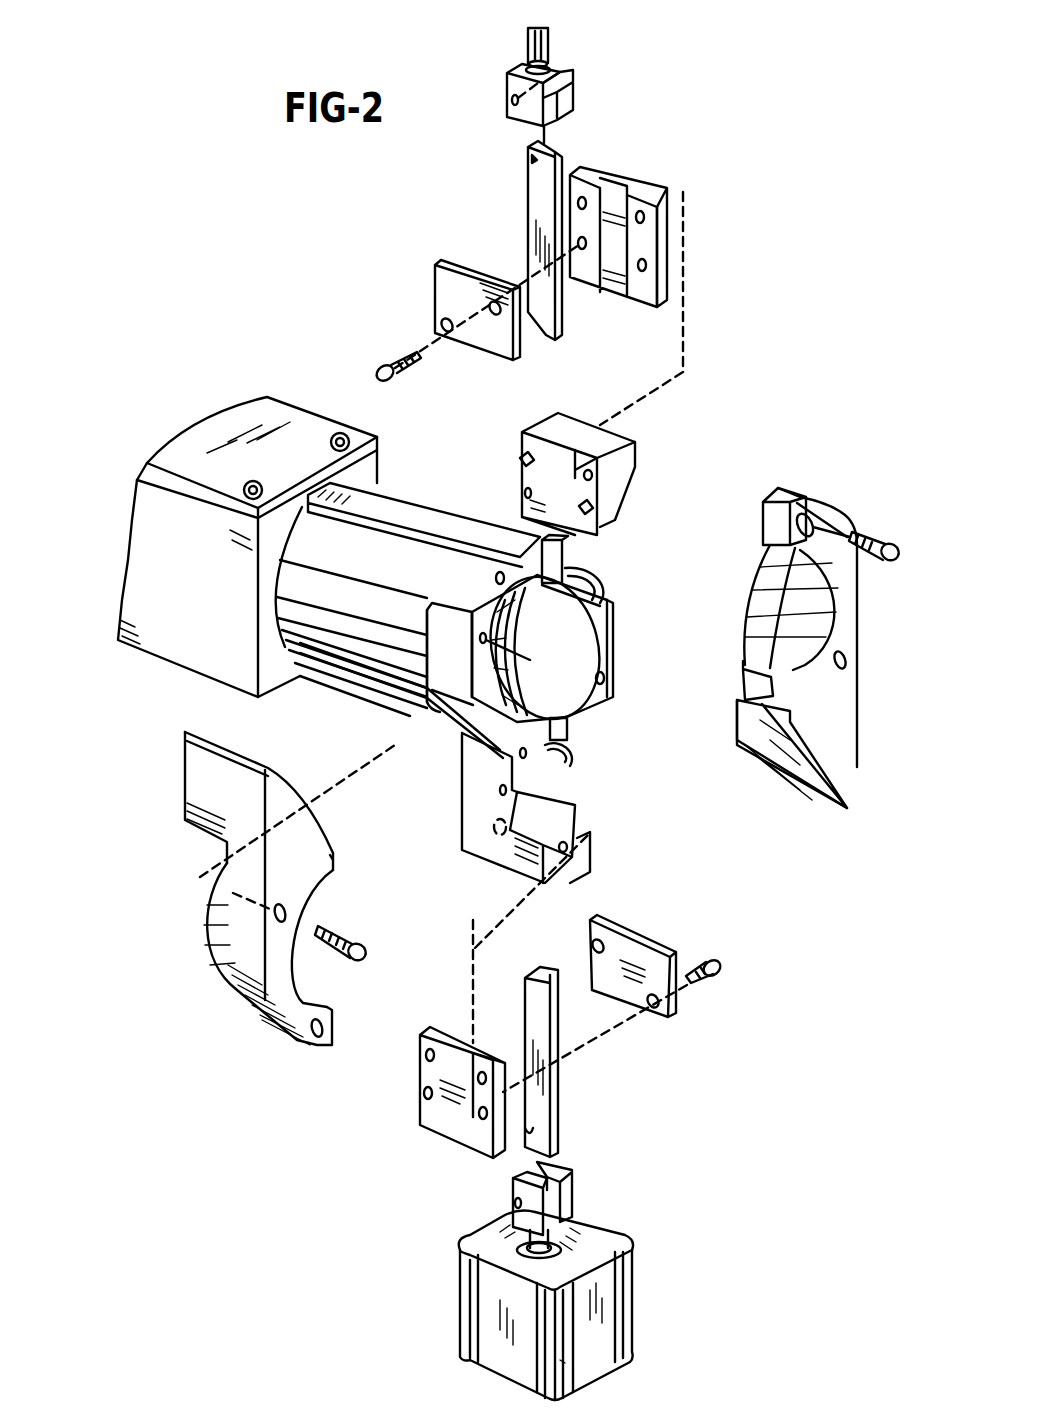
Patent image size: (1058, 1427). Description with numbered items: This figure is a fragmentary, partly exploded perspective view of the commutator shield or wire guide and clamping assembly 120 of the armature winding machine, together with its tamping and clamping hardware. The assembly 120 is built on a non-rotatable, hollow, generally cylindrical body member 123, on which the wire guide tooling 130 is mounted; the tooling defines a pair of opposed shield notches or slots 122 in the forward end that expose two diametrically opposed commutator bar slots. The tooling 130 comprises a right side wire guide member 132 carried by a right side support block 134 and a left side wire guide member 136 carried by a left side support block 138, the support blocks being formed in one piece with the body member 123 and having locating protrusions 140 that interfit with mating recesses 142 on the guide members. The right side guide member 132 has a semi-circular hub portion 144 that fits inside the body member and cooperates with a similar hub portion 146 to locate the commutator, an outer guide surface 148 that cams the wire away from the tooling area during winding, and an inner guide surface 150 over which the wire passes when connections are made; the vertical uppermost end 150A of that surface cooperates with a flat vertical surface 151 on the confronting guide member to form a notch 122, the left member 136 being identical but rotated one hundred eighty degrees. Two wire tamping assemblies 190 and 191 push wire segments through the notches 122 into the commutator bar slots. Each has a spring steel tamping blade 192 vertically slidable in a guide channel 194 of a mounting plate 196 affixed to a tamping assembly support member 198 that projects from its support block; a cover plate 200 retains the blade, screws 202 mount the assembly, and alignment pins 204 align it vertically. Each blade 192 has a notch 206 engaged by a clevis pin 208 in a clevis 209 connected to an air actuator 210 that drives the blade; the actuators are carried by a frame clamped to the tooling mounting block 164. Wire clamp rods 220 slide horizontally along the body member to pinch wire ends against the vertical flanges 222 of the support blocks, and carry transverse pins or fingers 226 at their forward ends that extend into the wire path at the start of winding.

The wire guide and clamping assembly 120 is at (347, 687).
The shield notches or slots 122 is at (560, 553).
The hollow body member 123 is at (383, 690).
The wire guide tooling 130 is at (265, 1045).
The right side wire guide member 132 is at (824, 492).
The right side support block 134 is at (617, 656).
The left side wire guide member 136 is at (245, 1022).
The left side support block 138 is at (490, 688).
The locating protrusions 140 is at (598, 600).
The recesses 142 is at (766, 490).
The semi-circular hub portion 144 is at (787, 583).
The hub portion 146 is at (206, 937).
The outer guide surface 148 is at (242, 962).
The inner guide surface 150 is at (186, 735).
The uppermost end of inner wire guide surface 150A is at (336, 856).
The flat vertical surface 151 is at (330, 1020).
The tooling mounting block 164 is at (218, 598).
The right side tamping assembly 190 is at (618, 160).
The tamping assembly 191 is at (425, 1145).
The tamping blade 192 is at (533, 200).
The guide channel 194 is at (617, 196).
The mounting plate 196 is at (668, 243).
The tamping assembly support member 198 is at (630, 462).
The cover plate 200 is at (433, 268).
The screws 202 is at (402, 350).
The alignment pins 204 is at (580, 510).
The notch 206 is at (533, 158).
The clevis pin 208 is at (513, 99).
The clevis 209 is at (575, 84).
The air actuator 210 is at (487, 1285).
The wire clamp rod 220 is at (390, 500).
The vertical flange 222 is at (460, 604).
The pins or fingers 226 is at (500, 573).